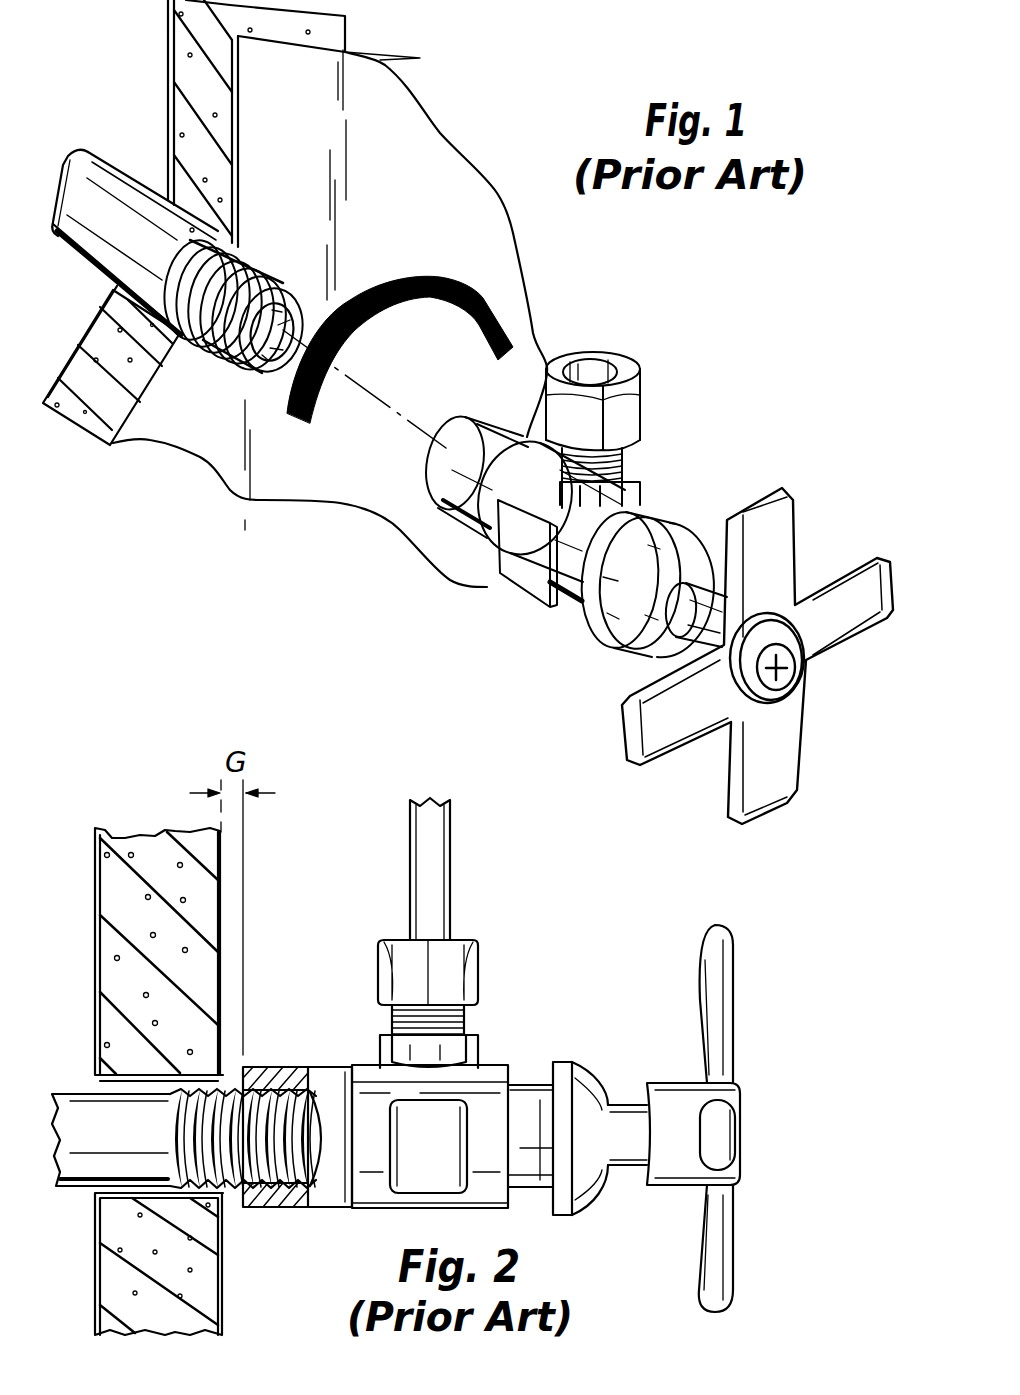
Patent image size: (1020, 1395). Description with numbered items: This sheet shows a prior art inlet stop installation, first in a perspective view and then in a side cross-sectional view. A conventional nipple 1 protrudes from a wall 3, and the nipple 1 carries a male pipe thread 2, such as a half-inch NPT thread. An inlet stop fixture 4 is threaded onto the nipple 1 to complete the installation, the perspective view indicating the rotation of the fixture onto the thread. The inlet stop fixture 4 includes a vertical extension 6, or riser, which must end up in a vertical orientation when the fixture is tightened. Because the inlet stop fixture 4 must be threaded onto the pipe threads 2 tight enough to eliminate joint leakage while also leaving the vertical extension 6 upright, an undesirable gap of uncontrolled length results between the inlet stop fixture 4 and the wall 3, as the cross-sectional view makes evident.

In FIG. 1, the nipple 1 is at (114, 150).
In FIG. 2, the nipple 1 is at (78, 1117).
In FIG. 1, the male pipe thread 2 is at (220, 402).
In FIG. 2, the male pipe thread 2 is at (273, 1074).
In FIG. 1, the wall 3 is at (430, 160).
In FIG. 2, the wall 3 is at (225, 1250).
In FIG. 1, the inlet stop fixture 4 is at (690, 465).
In FIG. 2, the inlet stop fixture 4 is at (500, 1033).
In FIG. 2, the vertical extension 6 is at (440, 875).